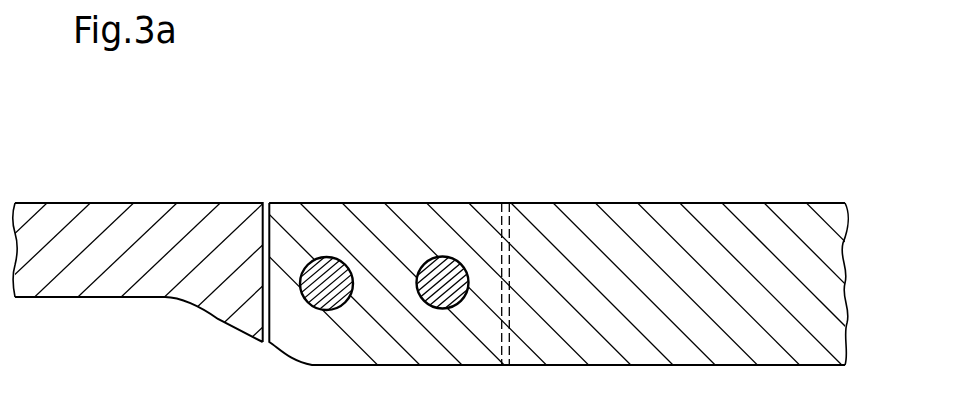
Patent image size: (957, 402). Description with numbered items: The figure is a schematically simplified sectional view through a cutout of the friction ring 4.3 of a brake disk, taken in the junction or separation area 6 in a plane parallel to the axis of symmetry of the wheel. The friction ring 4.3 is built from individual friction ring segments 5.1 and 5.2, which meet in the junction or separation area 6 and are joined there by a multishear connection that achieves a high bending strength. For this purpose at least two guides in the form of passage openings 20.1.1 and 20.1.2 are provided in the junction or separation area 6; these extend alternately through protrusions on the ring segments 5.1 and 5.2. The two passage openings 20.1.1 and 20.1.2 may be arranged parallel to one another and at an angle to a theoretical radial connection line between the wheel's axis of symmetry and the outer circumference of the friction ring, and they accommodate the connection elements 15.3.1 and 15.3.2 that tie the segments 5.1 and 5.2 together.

The friction ring 4.3 is at (611, 190).
The friction ring segment 5.1 is at (705, 244).
The friction ring segment 5.2 is at (170, 228).
The junction or separation area 6 is at (377, 197).
The connection element 15.3.1 is at (302, 280).
The connection element 15.3.2 is at (458, 283).
The passage opening 20.1.1 is at (337, 258).
The passage opening 20.1.2 is at (435, 262).